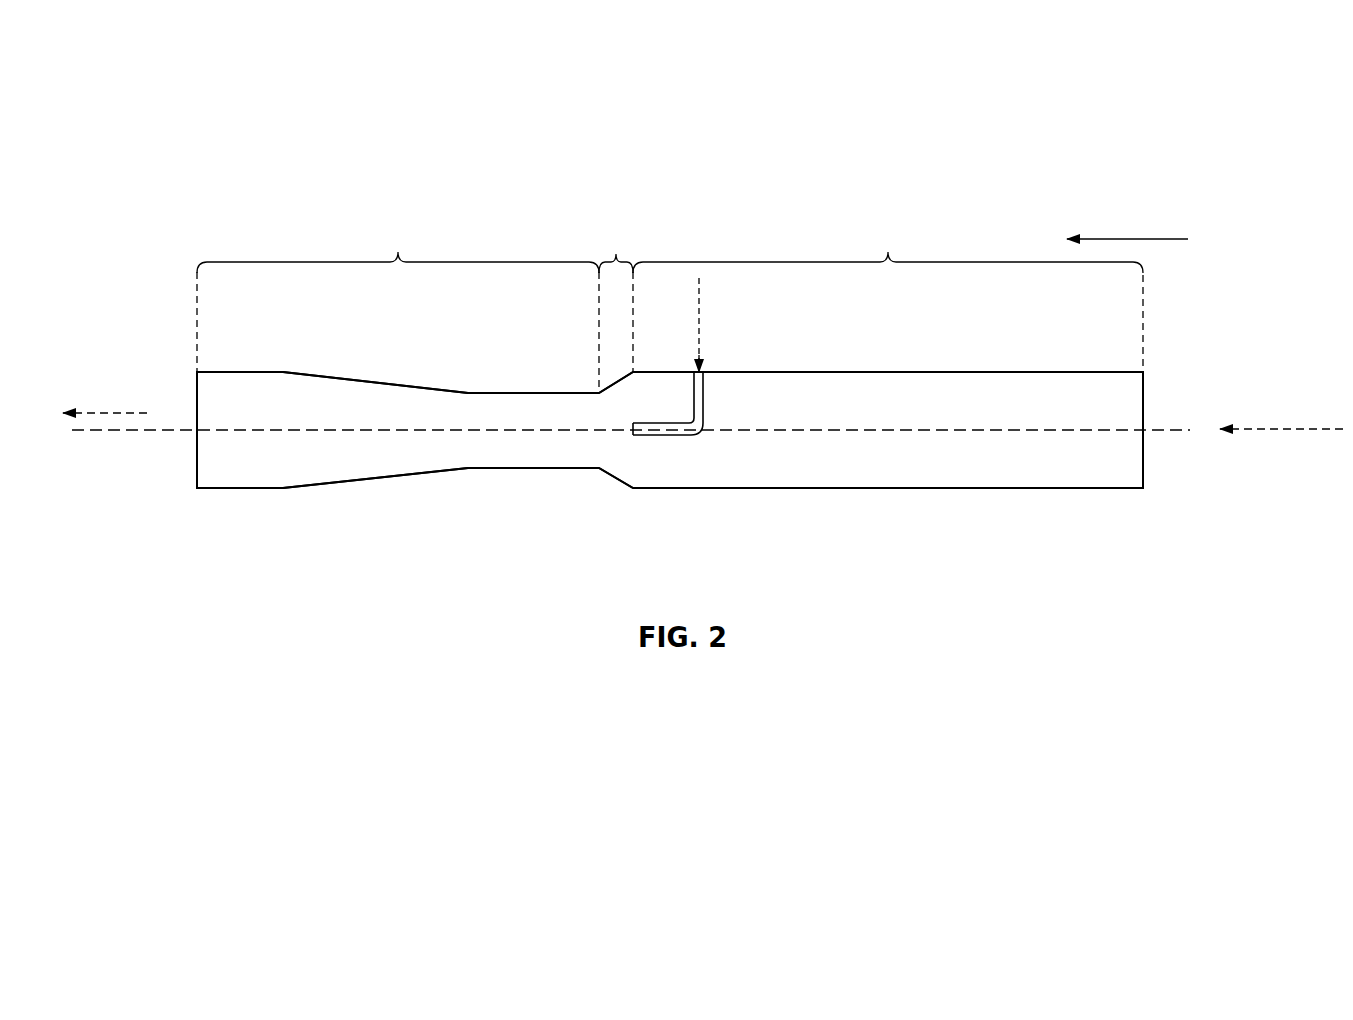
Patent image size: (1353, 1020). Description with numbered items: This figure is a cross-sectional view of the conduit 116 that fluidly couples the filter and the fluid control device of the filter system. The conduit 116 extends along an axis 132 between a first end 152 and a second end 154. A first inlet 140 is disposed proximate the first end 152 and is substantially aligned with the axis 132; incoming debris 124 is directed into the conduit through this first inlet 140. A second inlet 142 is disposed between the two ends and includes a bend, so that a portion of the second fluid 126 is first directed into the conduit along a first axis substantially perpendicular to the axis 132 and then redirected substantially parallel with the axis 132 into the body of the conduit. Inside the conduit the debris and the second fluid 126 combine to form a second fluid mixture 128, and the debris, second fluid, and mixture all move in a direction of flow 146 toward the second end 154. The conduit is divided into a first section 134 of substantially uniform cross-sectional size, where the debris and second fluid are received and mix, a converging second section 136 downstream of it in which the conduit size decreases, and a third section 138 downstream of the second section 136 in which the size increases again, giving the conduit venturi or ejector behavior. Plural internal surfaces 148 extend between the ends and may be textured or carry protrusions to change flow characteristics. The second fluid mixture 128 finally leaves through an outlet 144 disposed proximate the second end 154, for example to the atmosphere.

The conduit 116 is at (316, 150).
The inlet flow direction 124 is at (1270, 430).
The second fluid 126 is at (699, 333).
The second fluid mixture 128 is at (110, 413).
The axis 132 is at (992, 432).
The first section 134 is at (888, 353).
The second section 136 is at (616, 353).
The third section 138 is at (398, 353).
The first inlet 140 is at (1146, 439).
The second inlet 142 is at (704, 372).
The outlet 144 is at (180, 478).
The direction of flow 146 is at (1145, 237).
The internal surfaces 148 is at (818, 383).
The first end 152 is at (1152, 377).
The second end 154 is at (185, 290).